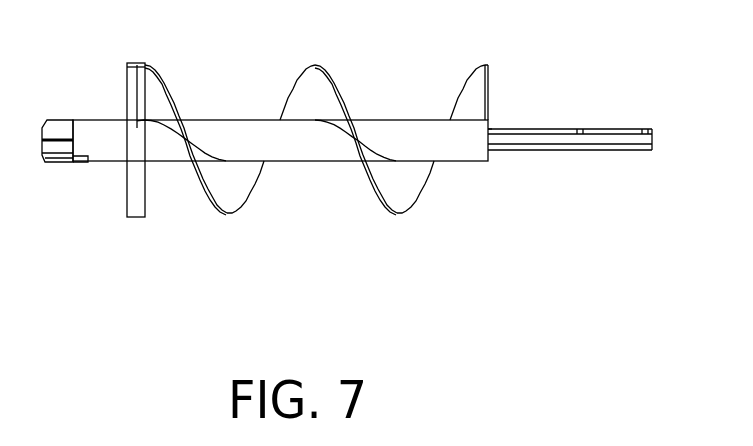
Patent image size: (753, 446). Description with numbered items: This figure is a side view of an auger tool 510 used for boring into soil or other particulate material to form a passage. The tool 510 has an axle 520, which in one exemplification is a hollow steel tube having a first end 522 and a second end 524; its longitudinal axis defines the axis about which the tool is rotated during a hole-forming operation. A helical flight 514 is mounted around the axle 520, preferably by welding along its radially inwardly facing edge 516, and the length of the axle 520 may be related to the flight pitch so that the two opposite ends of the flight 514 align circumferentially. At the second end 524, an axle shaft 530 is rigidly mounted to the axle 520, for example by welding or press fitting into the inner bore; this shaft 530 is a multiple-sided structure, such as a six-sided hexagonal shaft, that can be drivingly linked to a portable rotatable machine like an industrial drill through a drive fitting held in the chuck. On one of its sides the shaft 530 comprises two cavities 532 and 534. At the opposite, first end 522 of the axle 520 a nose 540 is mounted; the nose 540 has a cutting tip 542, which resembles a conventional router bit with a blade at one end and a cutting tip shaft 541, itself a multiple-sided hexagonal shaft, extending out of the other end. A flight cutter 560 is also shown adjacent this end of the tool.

The auger tool 510 is at (367, 70).
The helical flight 514 is at (400, 215).
The radially inwardly facing edge 516 is at (493, 129).
The axle 520 is at (465, 161).
The first end 522 is at (170, 183).
The second end 524 is at (508, 172).
The axle shaft 530 is at (618, 128).
The cavity 532 is at (575, 128).
The cavity 534 is at (642, 128).
The nose 540 is at (100, 94).
The cutting tip shaft 541 is at (87, 159).
The cutting tip 542 is at (62, 125).
The flight cutter 560 is at (124, 237).